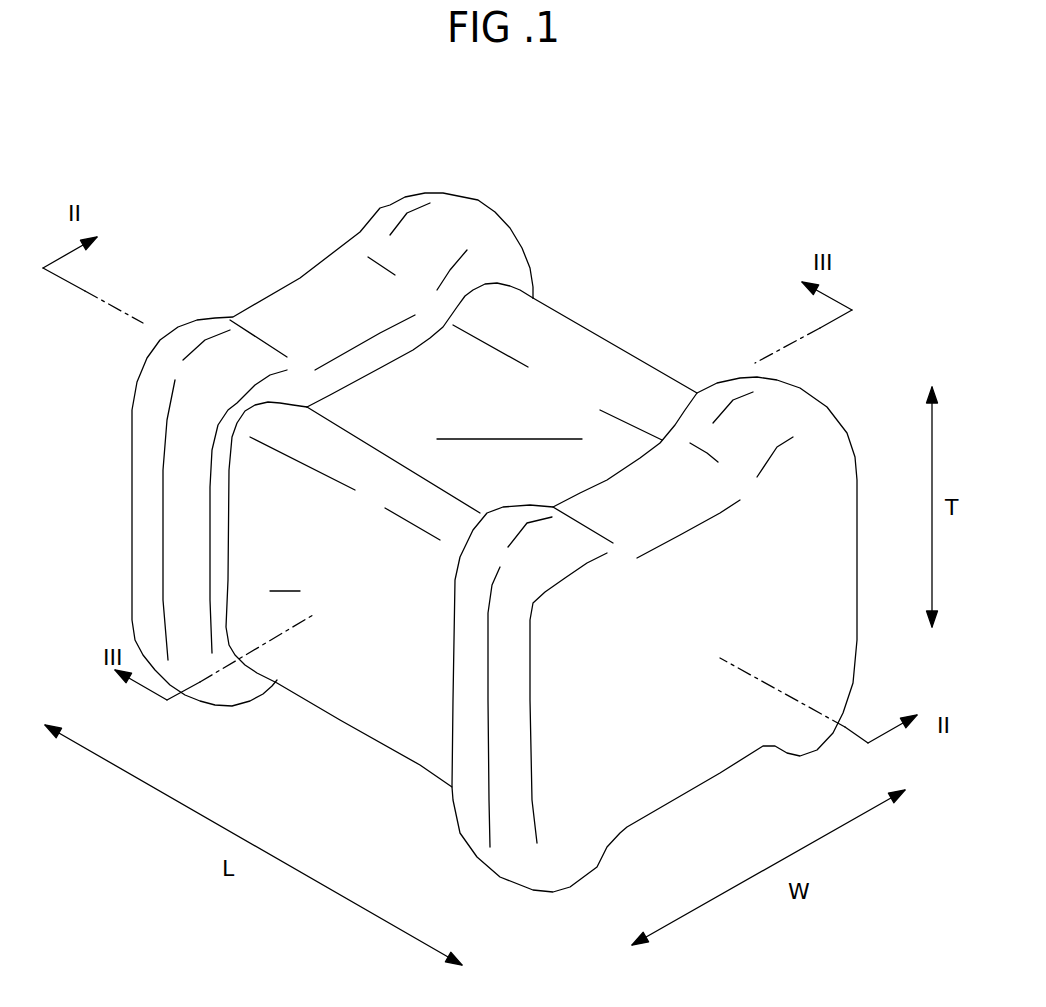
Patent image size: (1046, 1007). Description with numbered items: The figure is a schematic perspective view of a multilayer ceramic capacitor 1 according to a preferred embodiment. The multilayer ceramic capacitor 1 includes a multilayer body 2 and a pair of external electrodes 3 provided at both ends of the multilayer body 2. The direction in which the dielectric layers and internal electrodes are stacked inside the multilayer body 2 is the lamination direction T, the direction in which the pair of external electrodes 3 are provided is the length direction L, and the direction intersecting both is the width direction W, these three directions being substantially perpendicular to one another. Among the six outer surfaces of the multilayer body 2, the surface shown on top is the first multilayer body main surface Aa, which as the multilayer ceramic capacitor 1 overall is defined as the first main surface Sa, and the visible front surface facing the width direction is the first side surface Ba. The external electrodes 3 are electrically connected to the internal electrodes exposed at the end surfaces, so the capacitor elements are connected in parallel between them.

The multilayer ceramic capacitor 1 is at (849, 245).
The multilayer body 2 is at (395, 393).
The external electrodes 3 is at (443, 197).